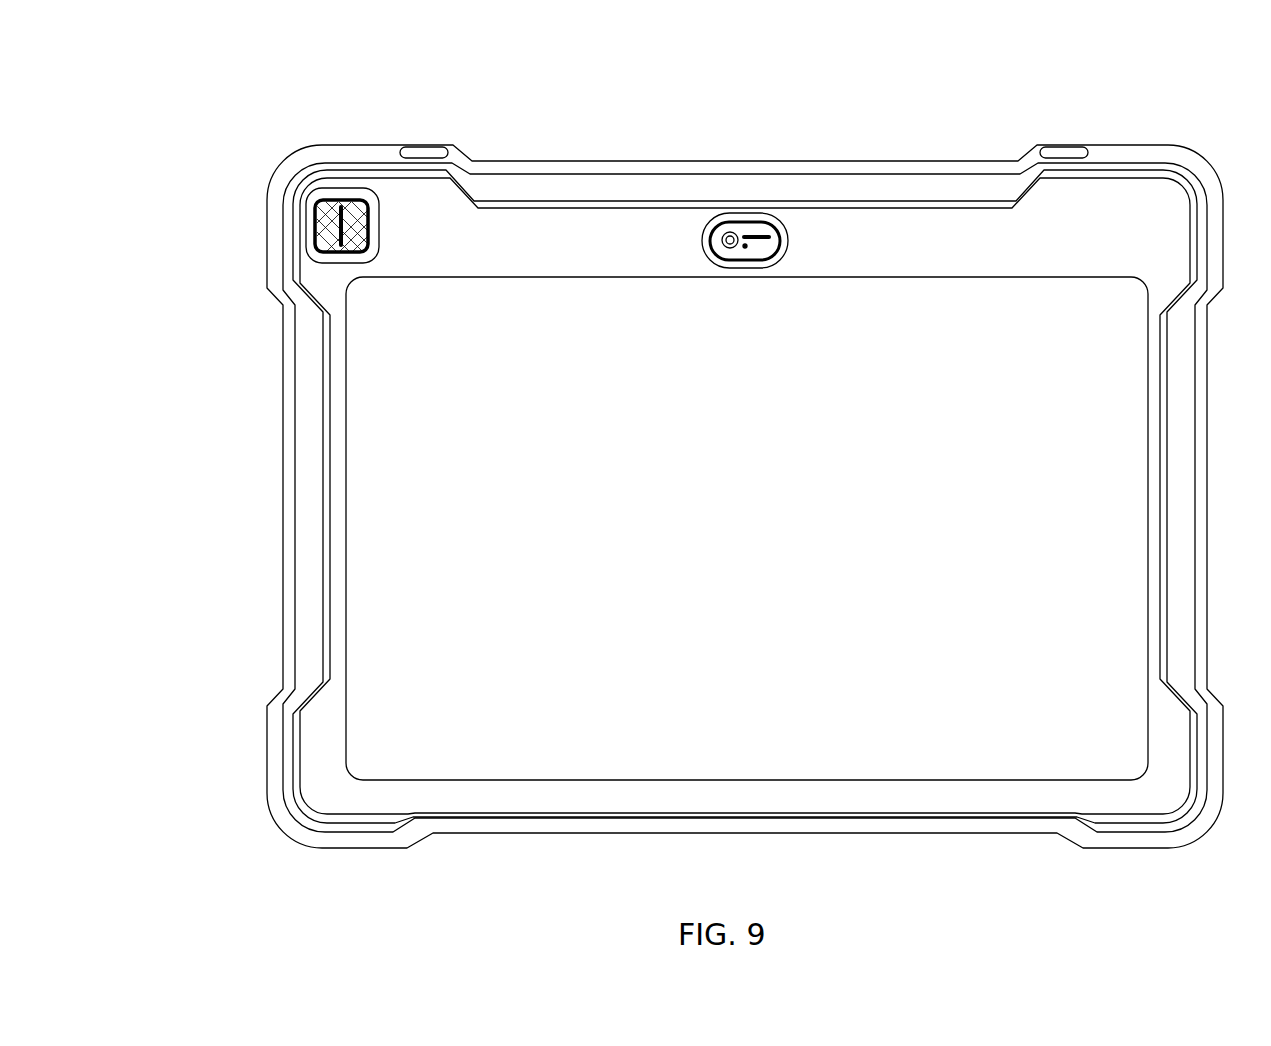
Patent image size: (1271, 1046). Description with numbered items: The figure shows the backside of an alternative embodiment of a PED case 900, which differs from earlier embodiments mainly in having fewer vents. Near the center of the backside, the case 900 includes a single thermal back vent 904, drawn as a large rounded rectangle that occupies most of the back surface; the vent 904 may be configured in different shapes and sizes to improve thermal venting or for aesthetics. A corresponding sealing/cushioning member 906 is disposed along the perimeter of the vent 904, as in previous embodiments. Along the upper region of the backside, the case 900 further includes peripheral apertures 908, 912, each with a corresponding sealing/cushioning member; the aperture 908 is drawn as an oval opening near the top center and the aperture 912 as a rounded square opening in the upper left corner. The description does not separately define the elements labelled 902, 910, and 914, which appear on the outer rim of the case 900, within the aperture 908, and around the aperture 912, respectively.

The PED case 900 is at (88, 74).
The protective bumper case 902 is at (603, 165).
The thermal back vent 904 is at (766, 528).
The sealing/cushioning member 906 is at (955, 310).
The peripheral aperture 908 is at (753, 220).
The camera lens and flash 910 is at (787, 248).
The peripheral aperture 912 is at (345, 226).
The button housing recess 914 is at (336, 252).